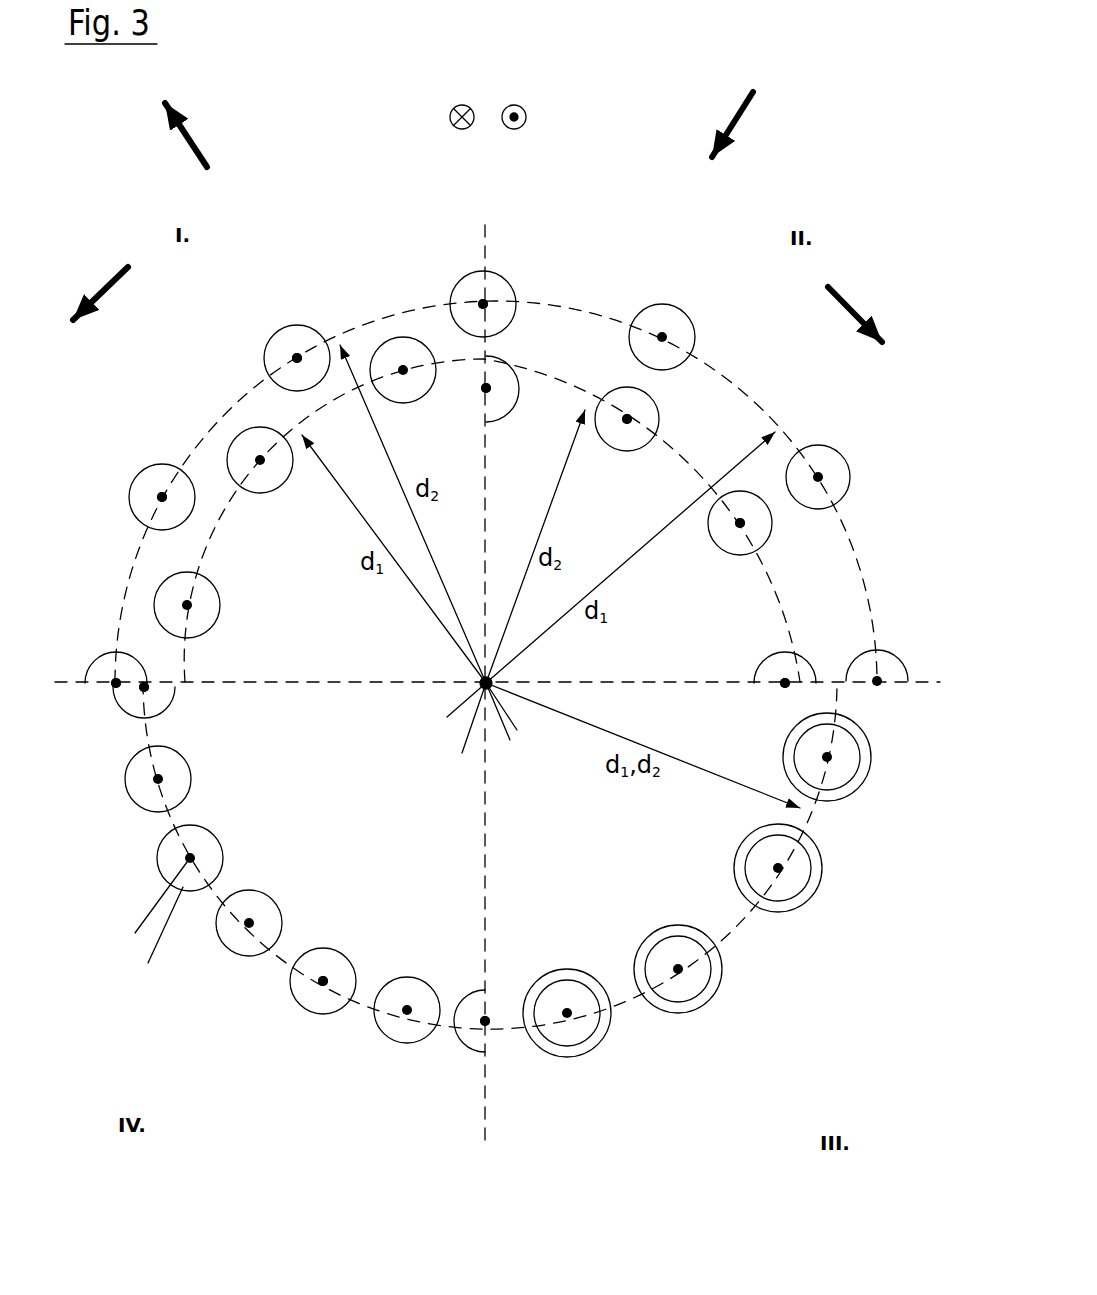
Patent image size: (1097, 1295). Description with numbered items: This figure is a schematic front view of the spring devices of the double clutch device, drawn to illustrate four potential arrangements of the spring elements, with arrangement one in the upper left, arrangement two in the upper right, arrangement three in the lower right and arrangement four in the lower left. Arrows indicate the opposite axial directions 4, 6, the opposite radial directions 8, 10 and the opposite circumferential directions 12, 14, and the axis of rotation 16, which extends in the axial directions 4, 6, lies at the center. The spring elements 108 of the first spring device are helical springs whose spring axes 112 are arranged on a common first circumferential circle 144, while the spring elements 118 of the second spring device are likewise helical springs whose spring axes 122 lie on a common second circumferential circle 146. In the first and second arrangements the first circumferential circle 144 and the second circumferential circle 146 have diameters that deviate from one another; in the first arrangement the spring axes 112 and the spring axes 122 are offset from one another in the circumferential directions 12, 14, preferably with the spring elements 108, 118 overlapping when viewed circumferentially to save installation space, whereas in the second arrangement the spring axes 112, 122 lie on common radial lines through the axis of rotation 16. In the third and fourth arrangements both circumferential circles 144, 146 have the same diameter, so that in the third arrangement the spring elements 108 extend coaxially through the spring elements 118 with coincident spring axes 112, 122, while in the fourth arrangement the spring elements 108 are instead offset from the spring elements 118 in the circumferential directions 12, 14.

The axial direction 4 is at (450, 117).
The axial direction 6 is at (527, 114).
The radial direction 8 is at (195, 143).
The radial direction 10 is at (736, 106).
The circumferential direction 12 is at (848, 297).
The circumferential direction 14 is at (110, 283).
The axis of rotation 16 is at (486, 683).
The spring element 108 is at (386, 349).
The spring axis 112 is at (403, 370).
The spring element 118 is at (465, 283).
The spring axis 122 is at (483, 304).
The first circumferential circle 144 is at (230, 503).
The second circumferential circle 146 is at (248, 395).